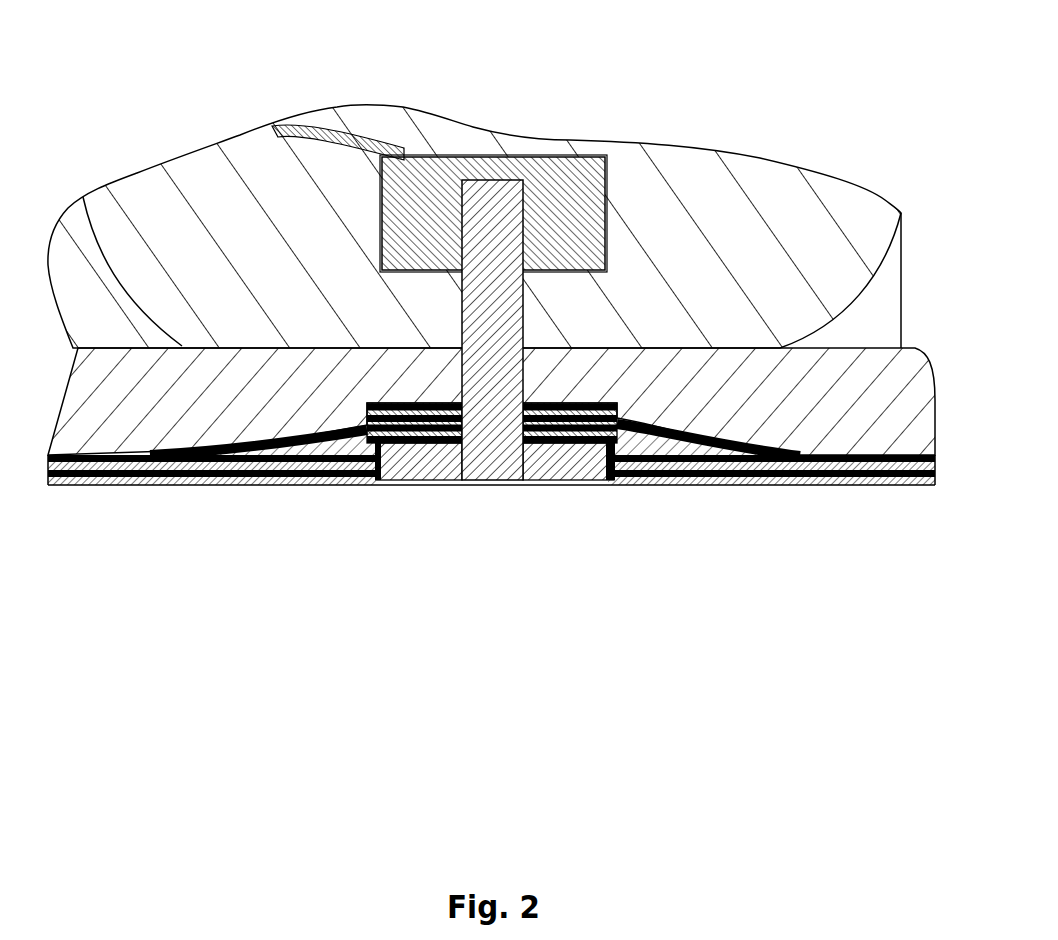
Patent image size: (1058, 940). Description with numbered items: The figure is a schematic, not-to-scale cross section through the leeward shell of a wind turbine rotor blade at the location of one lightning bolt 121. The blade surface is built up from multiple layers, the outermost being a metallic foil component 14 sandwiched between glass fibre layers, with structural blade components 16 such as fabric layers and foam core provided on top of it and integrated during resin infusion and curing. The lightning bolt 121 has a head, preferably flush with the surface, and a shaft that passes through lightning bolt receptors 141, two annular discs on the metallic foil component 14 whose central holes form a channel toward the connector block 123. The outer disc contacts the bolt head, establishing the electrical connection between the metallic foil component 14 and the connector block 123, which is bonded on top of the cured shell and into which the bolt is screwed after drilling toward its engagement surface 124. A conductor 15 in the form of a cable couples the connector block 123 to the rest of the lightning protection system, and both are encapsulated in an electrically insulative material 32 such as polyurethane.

The metallic foil component 14 is at (822, 468).
The lightning bolt receptor 141 is at (443, 418).
The conductor 15 is at (298, 135).
The structural blade components 16 is at (886, 388).
The electrically insulative material 32 is at (212, 207).
The lightning bolt 121 is at (495, 445).
The connector block 123 is at (563, 217).
The engagement surface 124 is at (455, 153).